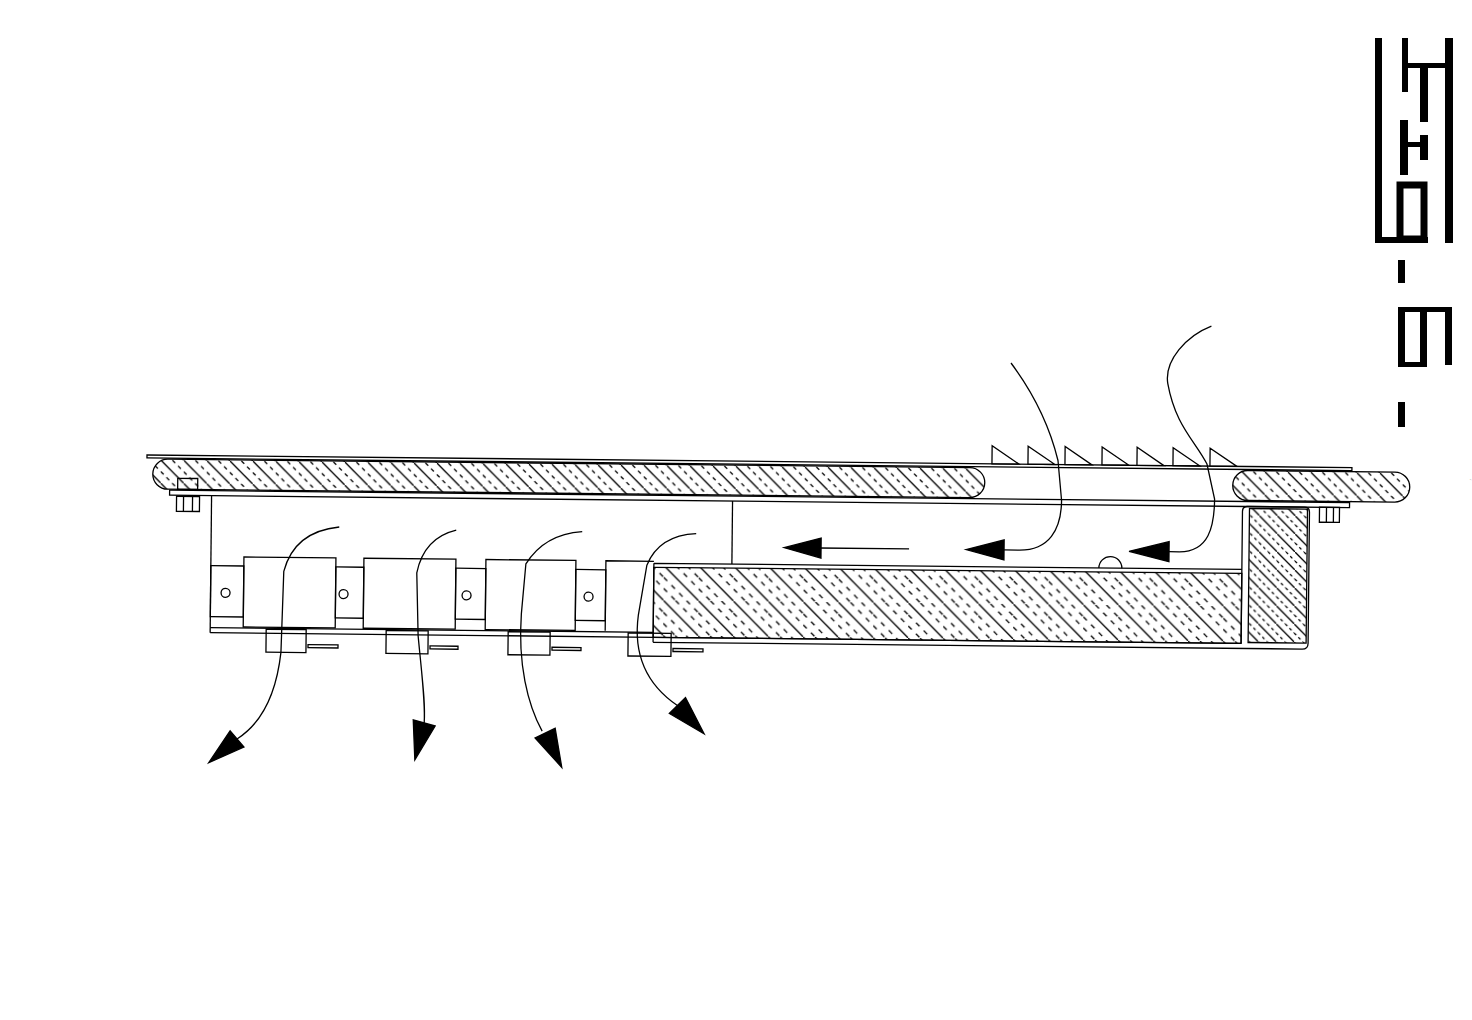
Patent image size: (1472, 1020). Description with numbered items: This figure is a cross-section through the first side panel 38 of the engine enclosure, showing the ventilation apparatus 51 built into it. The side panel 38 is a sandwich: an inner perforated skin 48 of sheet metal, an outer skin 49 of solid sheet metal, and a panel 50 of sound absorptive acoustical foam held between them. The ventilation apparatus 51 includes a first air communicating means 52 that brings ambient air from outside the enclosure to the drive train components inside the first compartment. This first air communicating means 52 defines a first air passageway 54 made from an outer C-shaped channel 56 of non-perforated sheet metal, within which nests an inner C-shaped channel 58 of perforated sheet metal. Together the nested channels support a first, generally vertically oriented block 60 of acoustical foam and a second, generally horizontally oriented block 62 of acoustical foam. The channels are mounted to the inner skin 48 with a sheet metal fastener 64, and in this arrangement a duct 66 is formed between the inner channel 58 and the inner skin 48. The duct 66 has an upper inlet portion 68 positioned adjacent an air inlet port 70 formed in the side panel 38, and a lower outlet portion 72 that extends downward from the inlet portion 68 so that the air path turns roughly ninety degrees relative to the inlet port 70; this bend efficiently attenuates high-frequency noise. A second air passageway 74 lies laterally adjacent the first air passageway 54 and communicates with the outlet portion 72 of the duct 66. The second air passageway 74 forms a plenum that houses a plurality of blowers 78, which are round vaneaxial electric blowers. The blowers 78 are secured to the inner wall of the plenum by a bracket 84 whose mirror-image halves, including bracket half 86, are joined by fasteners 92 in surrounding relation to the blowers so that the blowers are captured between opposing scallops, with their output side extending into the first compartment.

The first side panel 38 is at (620, 455).
The inner perforated skin 48 is at (207, 507).
The outer skin 49 is at (187, 455).
The panel of sound absorptive material 50 is at (300, 471).
The ventilation apparatus 51 is at (883, 728).
The first air communicating means 52 is at (1286, 723).
The first air passageway 54 is at (1320, 654).
The outer C-shaped channel 56 is at (1200, 636).
The inner C-shaped channel 58 is at (1123, 560).
The first block of acoustical foam 60 is at (1052, 611).
The second block of acoustical foam 62 is at (1300, 553).
The sheet metal fastener 64 is at (173, 500).
The duct 66 is at (1075, 537).
The inlet portion of duct 68 is at (1211, 546).
The air inlet port 70 is at (997, 466).
The outlet portion of duct 72 is at (778, 550).
The second air passageway 74 is at (733, 503).
The blowers 78 is at (300, 651).
The bracket 84 is at (205, 624).
The bracket half 86 is at (470, 597).
The fasteners 92 is at (590, 588).